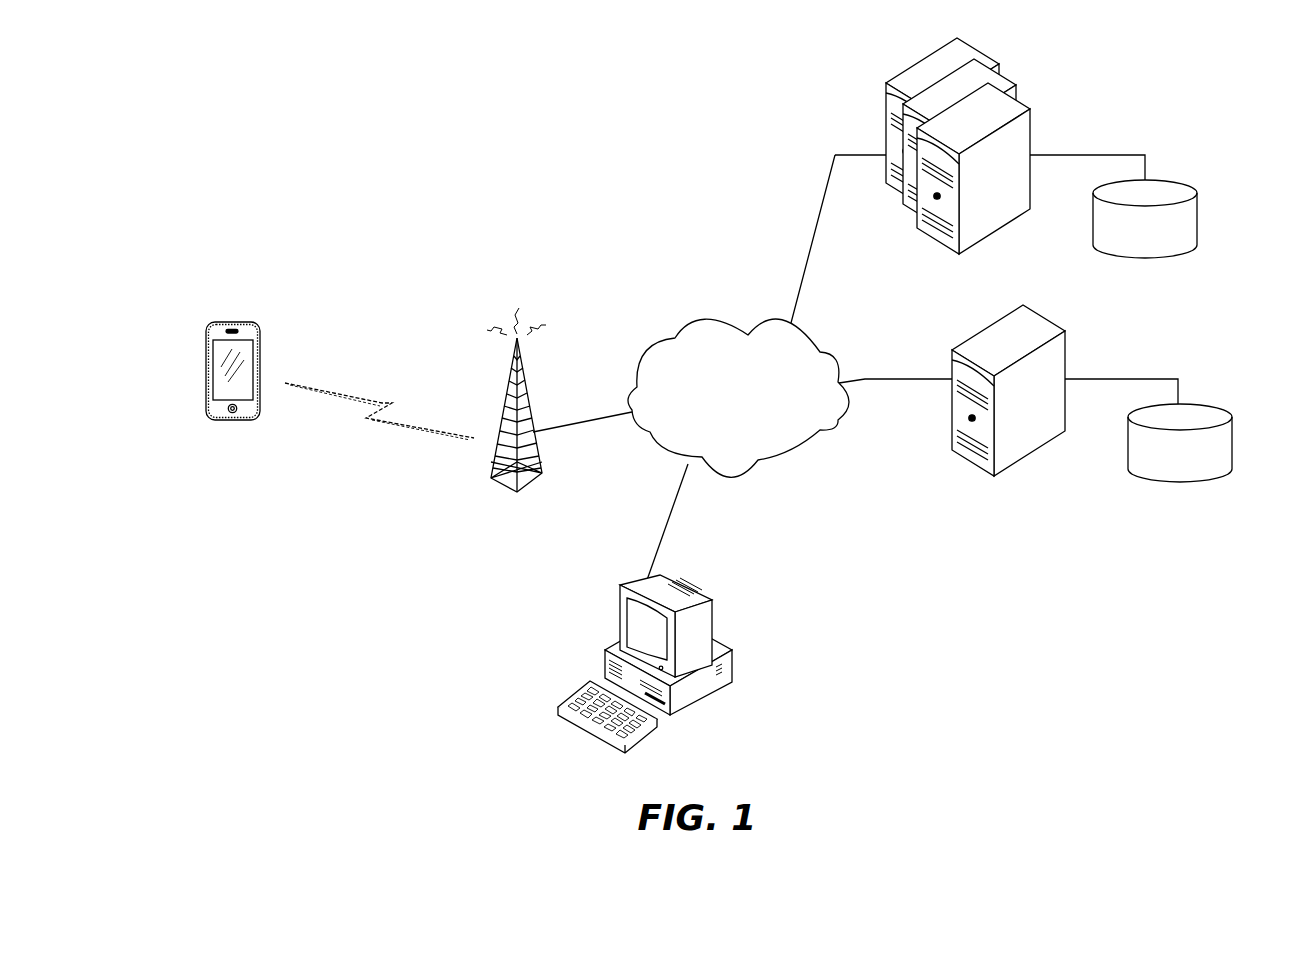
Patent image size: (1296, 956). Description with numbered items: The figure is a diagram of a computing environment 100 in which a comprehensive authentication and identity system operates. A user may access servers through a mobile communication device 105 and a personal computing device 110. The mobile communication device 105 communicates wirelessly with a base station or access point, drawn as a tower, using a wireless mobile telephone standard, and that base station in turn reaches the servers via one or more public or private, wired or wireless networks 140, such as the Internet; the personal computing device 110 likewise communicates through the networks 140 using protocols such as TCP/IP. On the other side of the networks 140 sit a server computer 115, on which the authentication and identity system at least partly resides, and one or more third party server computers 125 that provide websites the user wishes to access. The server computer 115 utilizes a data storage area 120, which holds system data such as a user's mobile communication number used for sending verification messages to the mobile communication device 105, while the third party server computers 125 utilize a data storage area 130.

The computing environment 100 is at (422, 198).
The mobile communication device 105 is at (233, 322).
The personal computing device 110 is at (713, 631).
The server computer 115 is at (1010, 467).
The data storage area 120 is at (1208, 405).
The third party server computers 125 is at (1001, 82).
The data storage area 130 is at (1168, 180).
The networks 140 is at (744, 475).